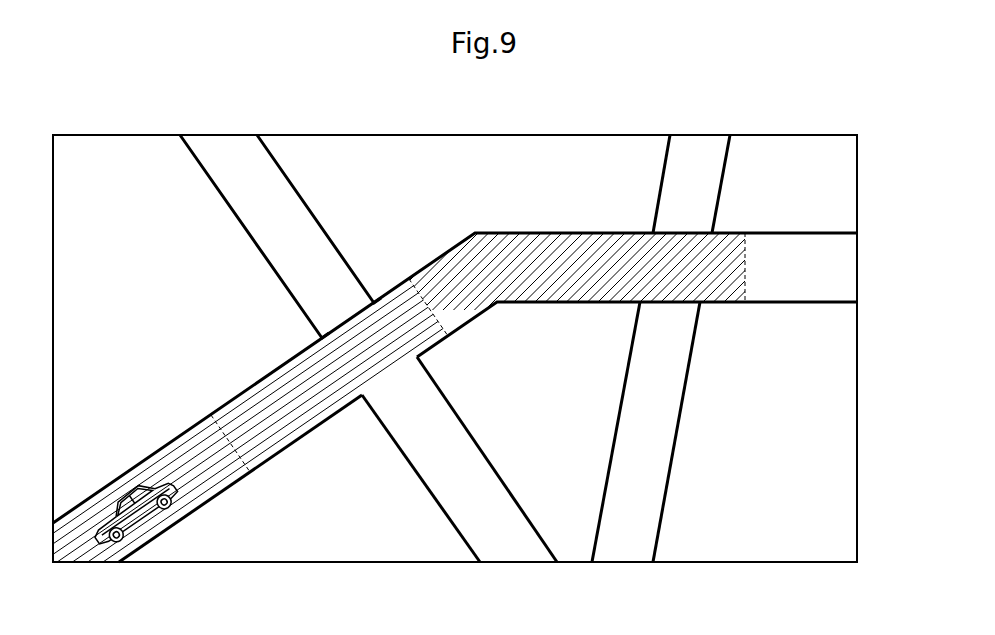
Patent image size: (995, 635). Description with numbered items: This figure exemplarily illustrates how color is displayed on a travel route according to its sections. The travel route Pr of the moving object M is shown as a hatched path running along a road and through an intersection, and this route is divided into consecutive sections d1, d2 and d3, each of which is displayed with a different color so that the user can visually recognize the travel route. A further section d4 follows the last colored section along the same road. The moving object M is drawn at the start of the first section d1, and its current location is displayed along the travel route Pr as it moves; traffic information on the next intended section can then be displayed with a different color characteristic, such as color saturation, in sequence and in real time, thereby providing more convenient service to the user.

The travel route Pr is at (148, 463).
The moving object M is at (118, 503).
The section d1 is at (256, 480).
The section d2 is at (454, 344).
The section d3 is at (745, 311).
The fourth distance section d4 is at (745, 322).